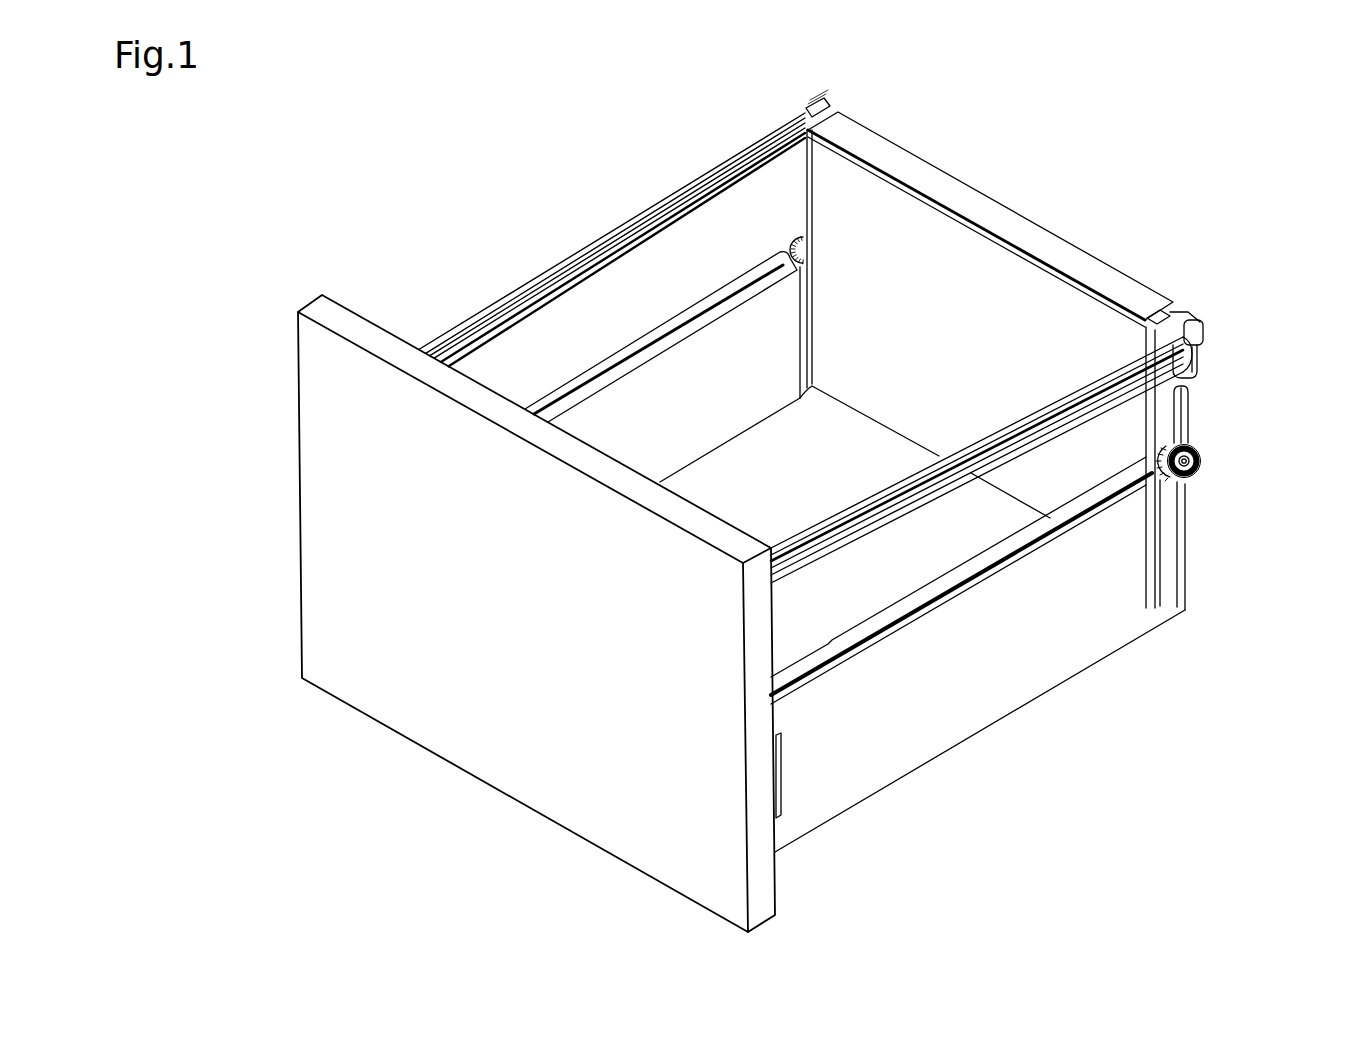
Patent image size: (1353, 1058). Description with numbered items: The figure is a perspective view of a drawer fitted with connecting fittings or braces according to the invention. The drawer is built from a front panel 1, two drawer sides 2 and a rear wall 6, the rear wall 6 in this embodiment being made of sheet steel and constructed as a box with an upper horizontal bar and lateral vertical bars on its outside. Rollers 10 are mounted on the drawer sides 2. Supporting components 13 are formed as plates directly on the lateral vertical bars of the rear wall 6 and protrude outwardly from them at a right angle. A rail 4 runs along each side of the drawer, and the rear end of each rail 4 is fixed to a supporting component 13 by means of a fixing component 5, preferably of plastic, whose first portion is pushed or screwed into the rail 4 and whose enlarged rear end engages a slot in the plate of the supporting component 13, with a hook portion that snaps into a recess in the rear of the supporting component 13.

The front panel 1 is at (398, 528).
The drawer sides 2 is at (1022, 652).
The rail 4 is at (700, 185).
The fixing component 5 is at (1198, 316).
The rear wall 6 is at (990, 210).
The rollers 10 is at (1201, 467).
The supporting component 13 is at (1205, 352).